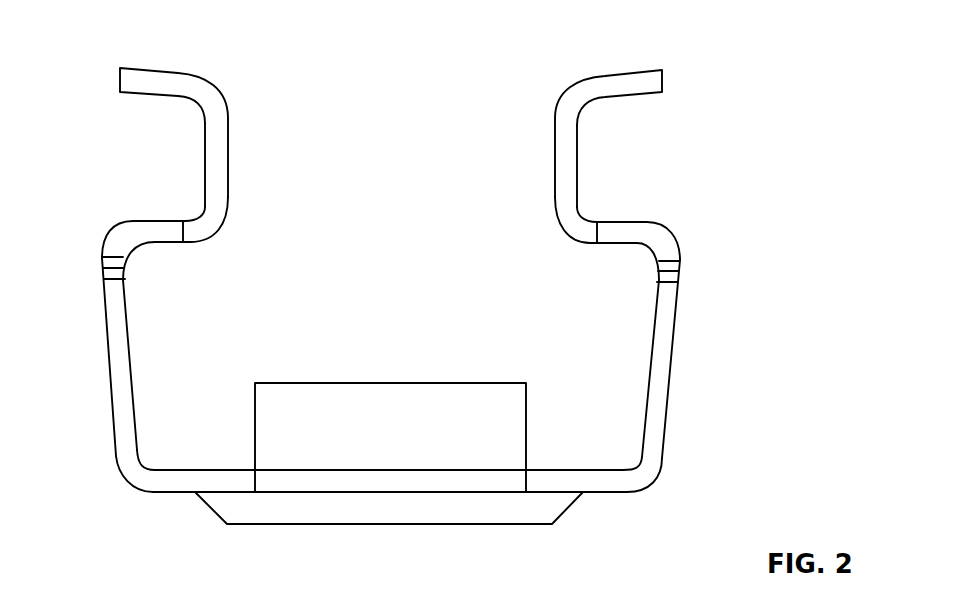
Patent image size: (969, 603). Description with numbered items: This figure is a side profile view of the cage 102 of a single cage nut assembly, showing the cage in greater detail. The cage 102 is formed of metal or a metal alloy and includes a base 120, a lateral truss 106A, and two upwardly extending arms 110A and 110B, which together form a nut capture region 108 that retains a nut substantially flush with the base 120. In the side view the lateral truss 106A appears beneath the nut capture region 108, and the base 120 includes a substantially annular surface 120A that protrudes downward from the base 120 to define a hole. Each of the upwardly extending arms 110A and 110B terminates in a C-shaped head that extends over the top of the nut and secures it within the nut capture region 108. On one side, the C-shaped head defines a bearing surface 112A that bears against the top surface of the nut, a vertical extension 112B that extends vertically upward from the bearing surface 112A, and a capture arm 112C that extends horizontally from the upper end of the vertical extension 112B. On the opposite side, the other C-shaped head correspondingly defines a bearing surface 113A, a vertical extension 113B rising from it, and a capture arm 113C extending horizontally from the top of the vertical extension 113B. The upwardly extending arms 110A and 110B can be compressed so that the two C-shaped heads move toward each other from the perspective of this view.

The cage 102 is at (681, 423).
The lateral truss 106A is at (312, 473).
The nut capture region 108 is at (181, 343).
The upwardly extending arm 110A is at (673, 358).
The upwardly extending arm 110B is at (108, 337).
The bearing surface 112A is at (622, 235).
The vertical extension 112B is at (565, 138).
The capture arm 112C is at (632, 72).
The bearing surface 113A is at (152, 233).
The vertical extension 113B is at (215, 148).
The capture arm 113C is at (173, 72).
The base 120 is at (600, 481).
The annular surface 120A is at (518, 512).